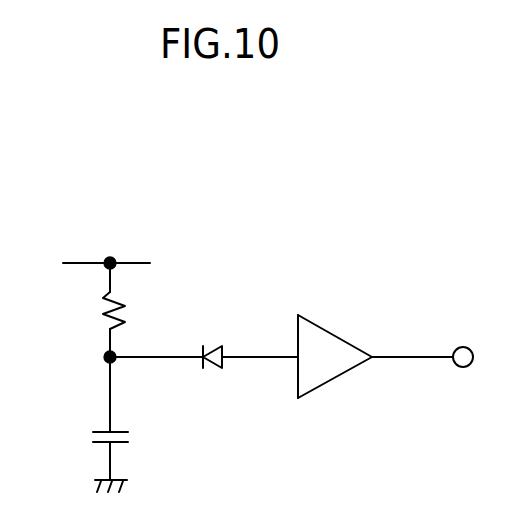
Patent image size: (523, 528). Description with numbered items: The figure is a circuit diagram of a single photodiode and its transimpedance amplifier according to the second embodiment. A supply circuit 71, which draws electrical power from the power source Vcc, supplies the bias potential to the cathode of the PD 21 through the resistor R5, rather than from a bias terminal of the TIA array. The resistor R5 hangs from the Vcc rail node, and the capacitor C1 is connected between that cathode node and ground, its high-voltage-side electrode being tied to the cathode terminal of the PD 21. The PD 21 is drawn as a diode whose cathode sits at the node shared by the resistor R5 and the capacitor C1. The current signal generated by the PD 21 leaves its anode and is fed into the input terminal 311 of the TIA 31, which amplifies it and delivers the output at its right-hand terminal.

The supply circuit 71 is at (95, 227).
The power source Vcc is at (136, 258).
The resistor R5 is at (106, 322).
The capacitor C1 is at (93, 439).
The PD 21 is at (212, 369).
The input terminal 311 is at (297, 355).
The TIA 31 is at (338, 337).